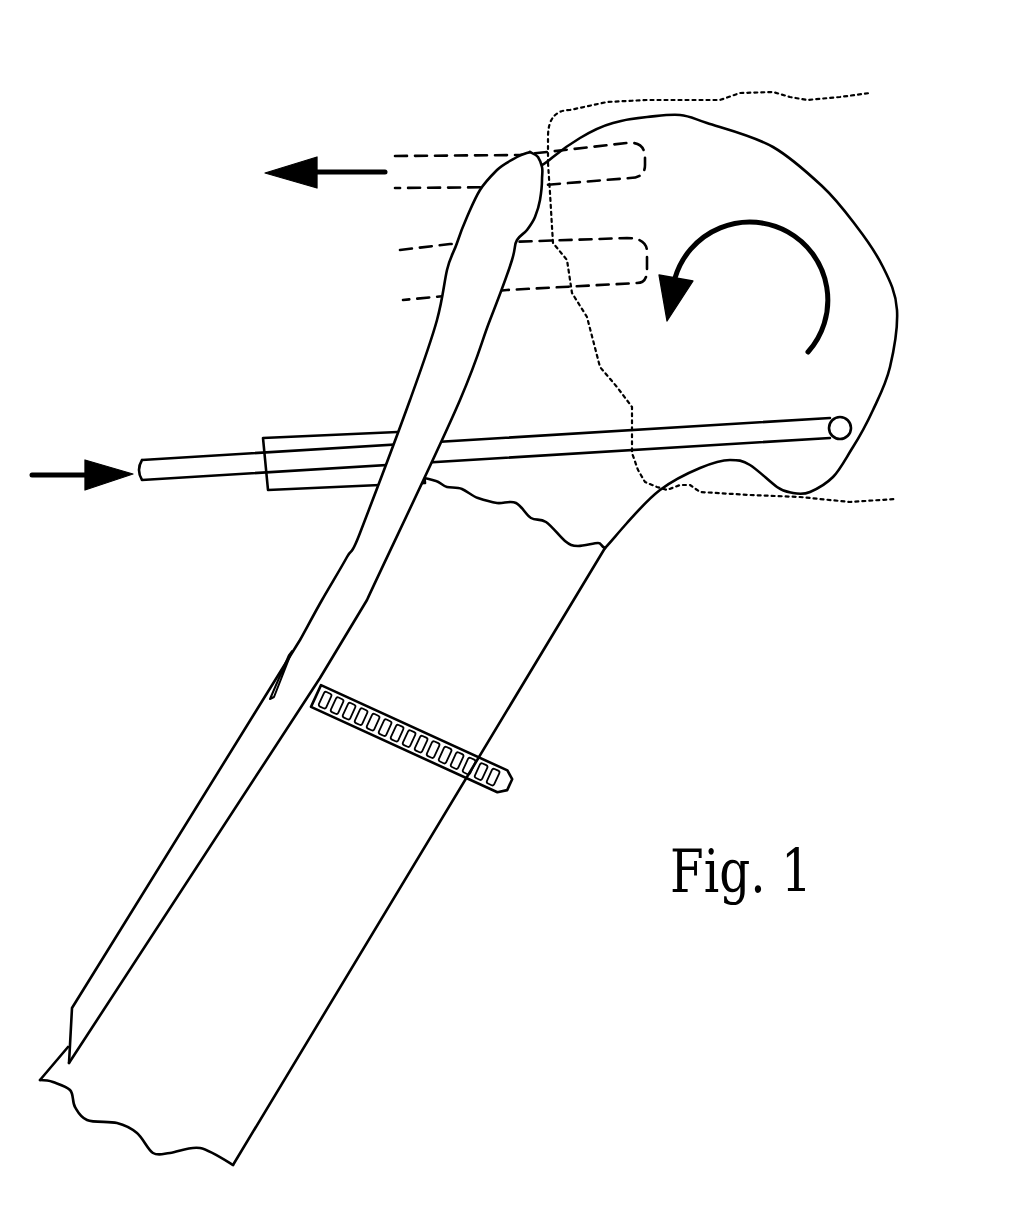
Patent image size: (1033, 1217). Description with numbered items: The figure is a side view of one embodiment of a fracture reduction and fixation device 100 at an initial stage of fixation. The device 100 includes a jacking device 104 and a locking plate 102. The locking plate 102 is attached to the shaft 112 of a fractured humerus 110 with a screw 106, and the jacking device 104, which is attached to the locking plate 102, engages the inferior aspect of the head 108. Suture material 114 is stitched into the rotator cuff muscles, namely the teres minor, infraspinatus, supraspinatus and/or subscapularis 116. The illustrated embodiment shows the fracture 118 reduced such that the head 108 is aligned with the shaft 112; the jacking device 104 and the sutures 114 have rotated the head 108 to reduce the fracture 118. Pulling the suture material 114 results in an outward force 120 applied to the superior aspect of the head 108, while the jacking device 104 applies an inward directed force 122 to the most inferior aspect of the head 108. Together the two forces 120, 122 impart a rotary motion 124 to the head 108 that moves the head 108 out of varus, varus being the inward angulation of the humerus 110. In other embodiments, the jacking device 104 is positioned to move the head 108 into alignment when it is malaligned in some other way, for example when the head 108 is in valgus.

The fracture reduction and fixation device 100 is at (136, 118).
The locking plate 102 is at (235, 749).
The jacking device 104 is at (236, 420).
The screw 106 is at (437, 736).
The head 108 is at (799, 163).
The fractured humerus 110 is at (558, 632).
The shaft 112 is at (323, 866).
The suture material 114 is at (465, 156).
The subscapularis 116 is at (740, 93).
The fracture 118 is at (605, 548).
The outward force 120 is at (352, 168).
The inward directed force 122 is at (53, 474).
The rotary motion 124 is at (740, 220).